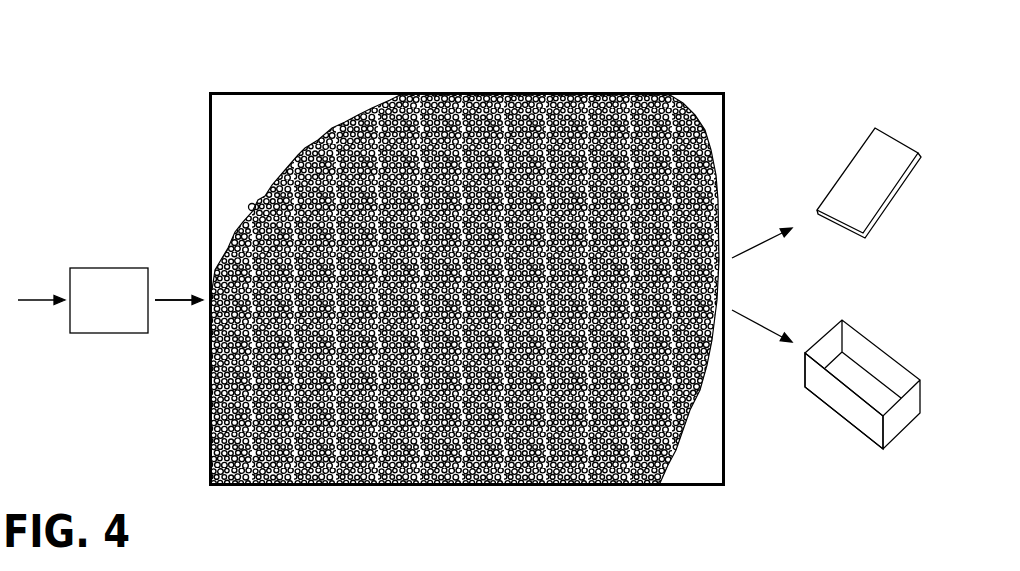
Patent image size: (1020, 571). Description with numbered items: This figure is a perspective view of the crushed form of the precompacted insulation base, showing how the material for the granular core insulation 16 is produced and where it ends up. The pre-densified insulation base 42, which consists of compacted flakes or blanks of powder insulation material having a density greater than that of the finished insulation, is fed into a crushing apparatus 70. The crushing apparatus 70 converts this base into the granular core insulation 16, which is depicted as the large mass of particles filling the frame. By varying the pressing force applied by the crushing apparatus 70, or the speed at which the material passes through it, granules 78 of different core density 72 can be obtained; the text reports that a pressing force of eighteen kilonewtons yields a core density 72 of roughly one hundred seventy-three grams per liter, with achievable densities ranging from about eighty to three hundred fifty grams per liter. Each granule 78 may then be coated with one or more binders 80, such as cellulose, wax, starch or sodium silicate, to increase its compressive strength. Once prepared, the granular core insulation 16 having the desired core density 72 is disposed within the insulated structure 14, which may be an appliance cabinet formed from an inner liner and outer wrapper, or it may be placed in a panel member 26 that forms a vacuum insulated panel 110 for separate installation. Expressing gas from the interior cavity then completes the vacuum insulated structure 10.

The vacuum insulated structure 10 is at (844, 419).
The insulated structure 14 is at (833, 393).
The granular core insulation 16 is at (703, 123).
The panel member 26 is at (897, 197).
The pre-densified insulation base 42 is at (26, 296).
The crushing apparatus 70 is at (95, 315).
The core density 72 is at (305, 133).
The granule 78 is at (249, 208).
The binder 80 is at (257, 200).
The vacuum insulated panel 110 is at (849, 204).